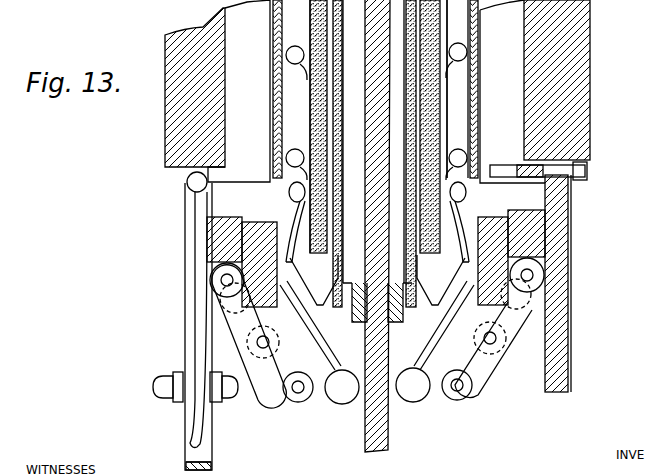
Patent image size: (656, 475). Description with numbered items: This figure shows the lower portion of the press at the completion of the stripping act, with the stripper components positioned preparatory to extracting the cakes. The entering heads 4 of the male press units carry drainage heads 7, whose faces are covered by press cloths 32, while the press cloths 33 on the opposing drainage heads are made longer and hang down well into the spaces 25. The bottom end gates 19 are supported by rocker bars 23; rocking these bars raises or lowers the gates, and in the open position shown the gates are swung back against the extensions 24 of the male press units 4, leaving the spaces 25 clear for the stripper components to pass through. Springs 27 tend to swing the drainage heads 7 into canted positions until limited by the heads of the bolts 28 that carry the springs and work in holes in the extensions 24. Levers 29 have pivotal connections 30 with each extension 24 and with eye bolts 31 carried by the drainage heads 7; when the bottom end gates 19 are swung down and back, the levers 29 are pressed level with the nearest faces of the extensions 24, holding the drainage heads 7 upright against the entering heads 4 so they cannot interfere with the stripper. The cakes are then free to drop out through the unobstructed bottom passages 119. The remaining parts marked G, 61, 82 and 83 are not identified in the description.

The entering heads 4 is at (176, 108).
The drainage heads 7 is at (237, 128).
The press cloths 32 is at (278, 80).
The press cloths 33 is at (314, 108).
The gap G is at (456, 100).
The bolts 28 is at (585, 160).
The springs 27 is at (572, 197).
The extensions 24 is at (558, 250).
The bottom end gates 19 is at (500, 234).
The eye bolts 31 is at (187, 182).
The levers 29 is at (200, 213).
The pivotal connections 30 is at (195, 437).
The spaces 25 is at (232, 300).
The roller arm 82 is at (372, 336).
The link 83 is at (377, 325).
The wedge 61 is at (278, 284).
The bottom passages 119 is at (377, 226).
The rocker bars 23 is at (296, 400).